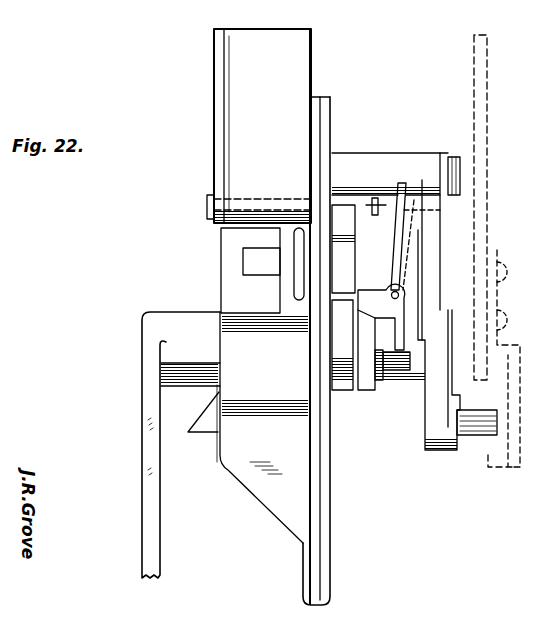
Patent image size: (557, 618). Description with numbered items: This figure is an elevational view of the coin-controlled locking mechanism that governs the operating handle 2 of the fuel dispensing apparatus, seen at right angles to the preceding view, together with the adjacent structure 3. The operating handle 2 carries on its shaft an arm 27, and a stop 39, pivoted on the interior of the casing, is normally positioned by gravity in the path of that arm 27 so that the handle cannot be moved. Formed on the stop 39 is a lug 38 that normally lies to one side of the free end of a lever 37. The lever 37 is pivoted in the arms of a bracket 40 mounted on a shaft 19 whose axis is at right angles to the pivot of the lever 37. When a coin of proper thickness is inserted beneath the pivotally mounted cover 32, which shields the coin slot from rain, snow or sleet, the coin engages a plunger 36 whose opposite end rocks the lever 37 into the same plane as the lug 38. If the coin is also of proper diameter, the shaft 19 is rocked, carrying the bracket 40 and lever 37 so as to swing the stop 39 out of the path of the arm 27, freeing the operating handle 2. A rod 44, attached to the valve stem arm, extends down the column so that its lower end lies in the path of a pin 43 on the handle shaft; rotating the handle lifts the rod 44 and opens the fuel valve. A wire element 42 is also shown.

The operating handle 2 is at (146, 463).
The body plate 3 is at (258, 487).
The shaft 19 is at (350, 318).
The arm 27 is at (436, 455).
The cover 32 is at (297, 56).
The plunger 36 is at (371, 385).
The lever 37 is at (397, 238).
The lug 38 is at (400, 195).
The stop 39 is at (433, 234).
The bracket 40 is at (372, 302).
The spring wire 42 is at (200, 428).
The pin 43 is at (478, 432).
The rod 44 is at (474, 163).